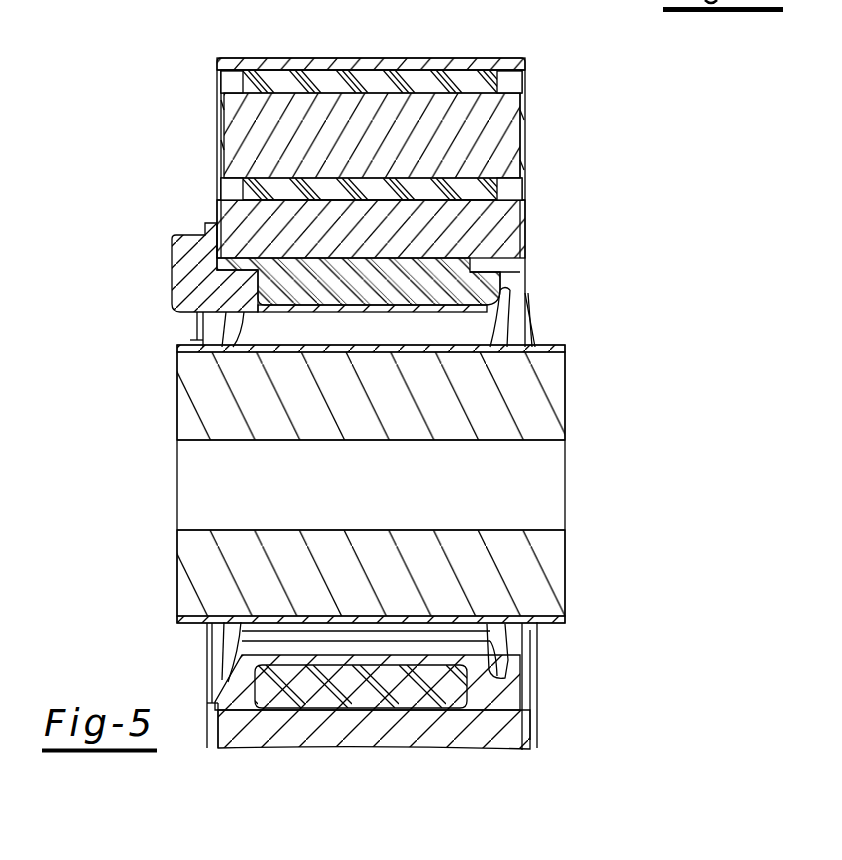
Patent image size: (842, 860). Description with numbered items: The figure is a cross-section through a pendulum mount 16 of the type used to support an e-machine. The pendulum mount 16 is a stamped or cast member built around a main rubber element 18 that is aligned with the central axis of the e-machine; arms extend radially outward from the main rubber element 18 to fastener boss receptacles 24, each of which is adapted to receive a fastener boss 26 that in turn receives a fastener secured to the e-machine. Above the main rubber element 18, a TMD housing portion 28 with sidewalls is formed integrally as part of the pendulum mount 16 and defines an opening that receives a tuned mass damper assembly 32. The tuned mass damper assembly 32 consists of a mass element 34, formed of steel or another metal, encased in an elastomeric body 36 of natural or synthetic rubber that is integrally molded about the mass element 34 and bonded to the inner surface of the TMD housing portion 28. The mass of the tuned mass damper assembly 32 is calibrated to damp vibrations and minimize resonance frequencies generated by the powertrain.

The pendulum mount 16 is at (508, 730).
The main rubber element 18 is at (540, 392).
The fastener boss receptacle 24 is at (565, 0).
The fastener boss 26 is at (162, 0).
The TMD housing portion 28 is at (367, 63).
The tuned mass damper assembly 32 is at (197, 70).
The mass element 34 is at (502, 135).
The elastomeric body 36 is at (465, 86).